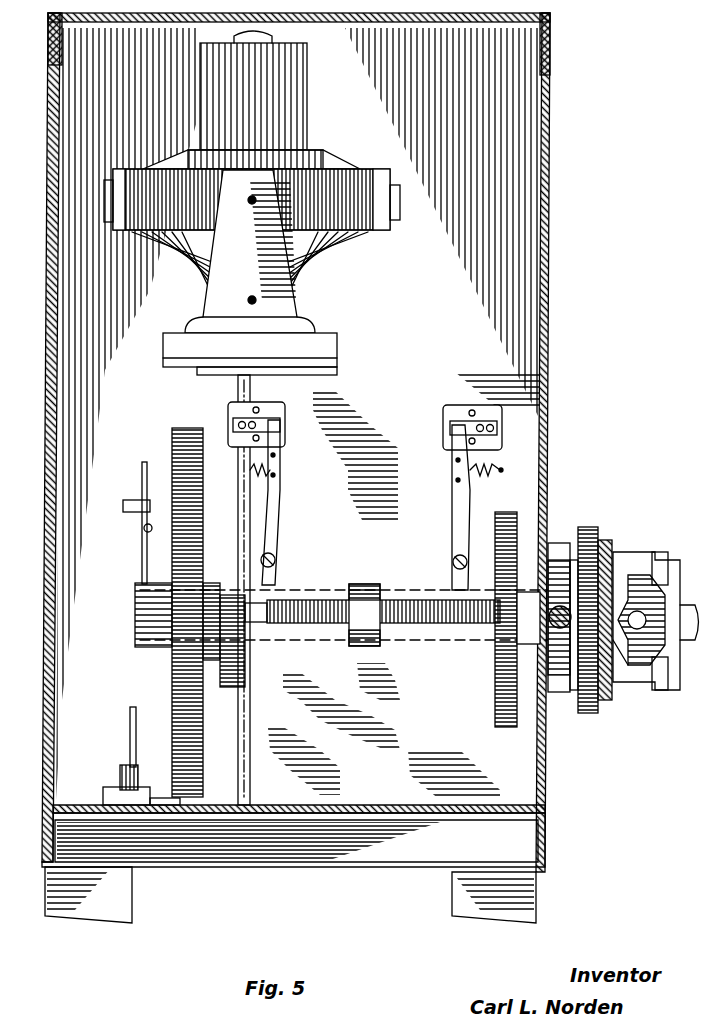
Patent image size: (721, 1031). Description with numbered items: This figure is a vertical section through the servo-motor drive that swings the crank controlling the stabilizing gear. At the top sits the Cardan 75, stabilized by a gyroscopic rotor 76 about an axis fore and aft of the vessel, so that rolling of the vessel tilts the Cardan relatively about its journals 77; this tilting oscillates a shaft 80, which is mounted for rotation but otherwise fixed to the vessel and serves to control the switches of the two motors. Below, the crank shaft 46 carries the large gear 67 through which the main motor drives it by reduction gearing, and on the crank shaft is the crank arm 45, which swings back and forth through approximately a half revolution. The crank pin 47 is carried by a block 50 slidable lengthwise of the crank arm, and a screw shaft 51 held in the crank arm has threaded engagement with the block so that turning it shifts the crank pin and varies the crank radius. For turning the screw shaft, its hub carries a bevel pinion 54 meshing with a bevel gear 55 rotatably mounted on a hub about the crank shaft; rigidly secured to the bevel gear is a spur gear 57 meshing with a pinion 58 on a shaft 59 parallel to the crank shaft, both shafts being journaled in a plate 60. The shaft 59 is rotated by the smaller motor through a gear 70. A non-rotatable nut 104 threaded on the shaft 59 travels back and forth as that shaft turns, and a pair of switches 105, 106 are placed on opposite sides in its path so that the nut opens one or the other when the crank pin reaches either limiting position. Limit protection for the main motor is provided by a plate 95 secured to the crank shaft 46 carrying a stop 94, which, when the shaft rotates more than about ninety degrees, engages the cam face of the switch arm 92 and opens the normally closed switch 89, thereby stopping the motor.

The gyroscopic rotor 76 is at (308, 93).
The Cardan 75 is at (350, 185).
The journals 77 is at (248, 200).
The shaft 80 is at (250, 302).
The gear 67 is at (185, 428).
The switch 105 is at (272, 436).
The switch 106 is at (452, 445).
The stop 94 is at (128, 505).
The plate 95 is at (144, 530).
The crank shaft 46 is at (138, 598).
The nut 104 is at (368, 595).
The shaft 59 is at (320, 626).
The gear 70 is at (512, 520).
The spur gear 57 is at (595, 530).
The plate 60 is at (562, 690).
The pinion 58 is at (605, 558).
The bevel gear 55 is at (605, 690).
The crank pin 47 is at (693, 600).
The screw shaft 51 is at (648, 624).
The block 50 is at (690, 605).
The bevel pinion 54 is at (668, 680).
The crank arm 45 is at (625, 665).
The switch arm 92 is at (130, 740).
The switch 89 is at (120, 777).